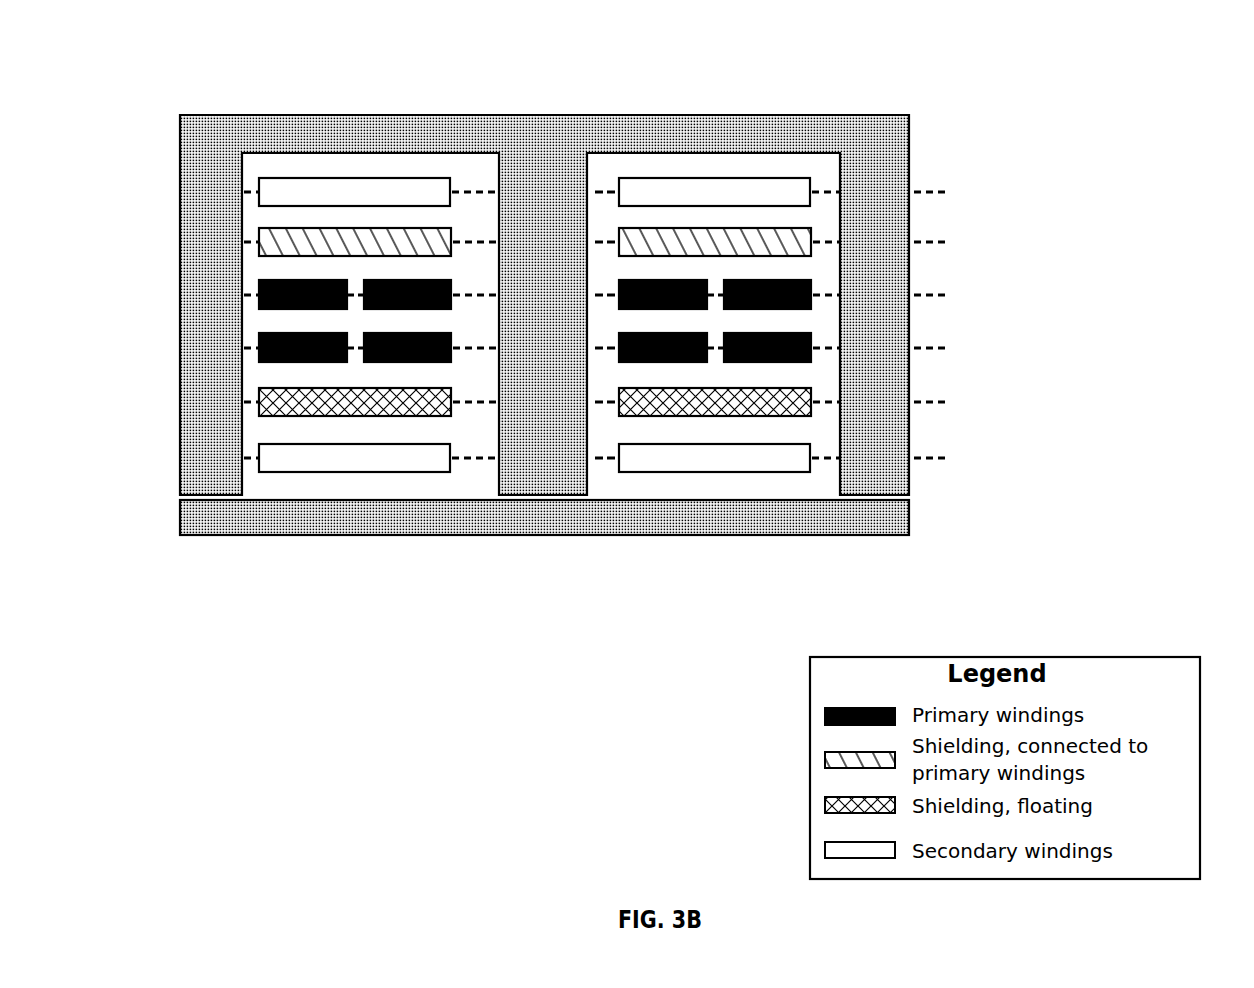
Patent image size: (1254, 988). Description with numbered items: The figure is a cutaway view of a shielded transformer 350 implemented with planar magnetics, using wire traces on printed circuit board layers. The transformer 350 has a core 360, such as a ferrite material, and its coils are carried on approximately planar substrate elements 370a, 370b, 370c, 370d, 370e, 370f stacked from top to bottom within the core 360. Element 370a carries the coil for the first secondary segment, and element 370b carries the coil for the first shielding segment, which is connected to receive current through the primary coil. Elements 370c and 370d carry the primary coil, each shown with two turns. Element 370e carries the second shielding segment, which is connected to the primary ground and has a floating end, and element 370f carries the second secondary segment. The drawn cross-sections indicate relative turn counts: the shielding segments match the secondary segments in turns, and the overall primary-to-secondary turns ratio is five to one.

The shielded transformer 350 is at (127, 52).
The core 360 is at (272, 134).
The substrate element 370a is at (153, 188).
The substrate element 370b is at (153, 238).
The substrate element 370c is at (153, 291).
The substrate element 370d is at (153, 344).
The substrate element 370e is at (153, 398).
The substrate element 370f is at (153, 454).